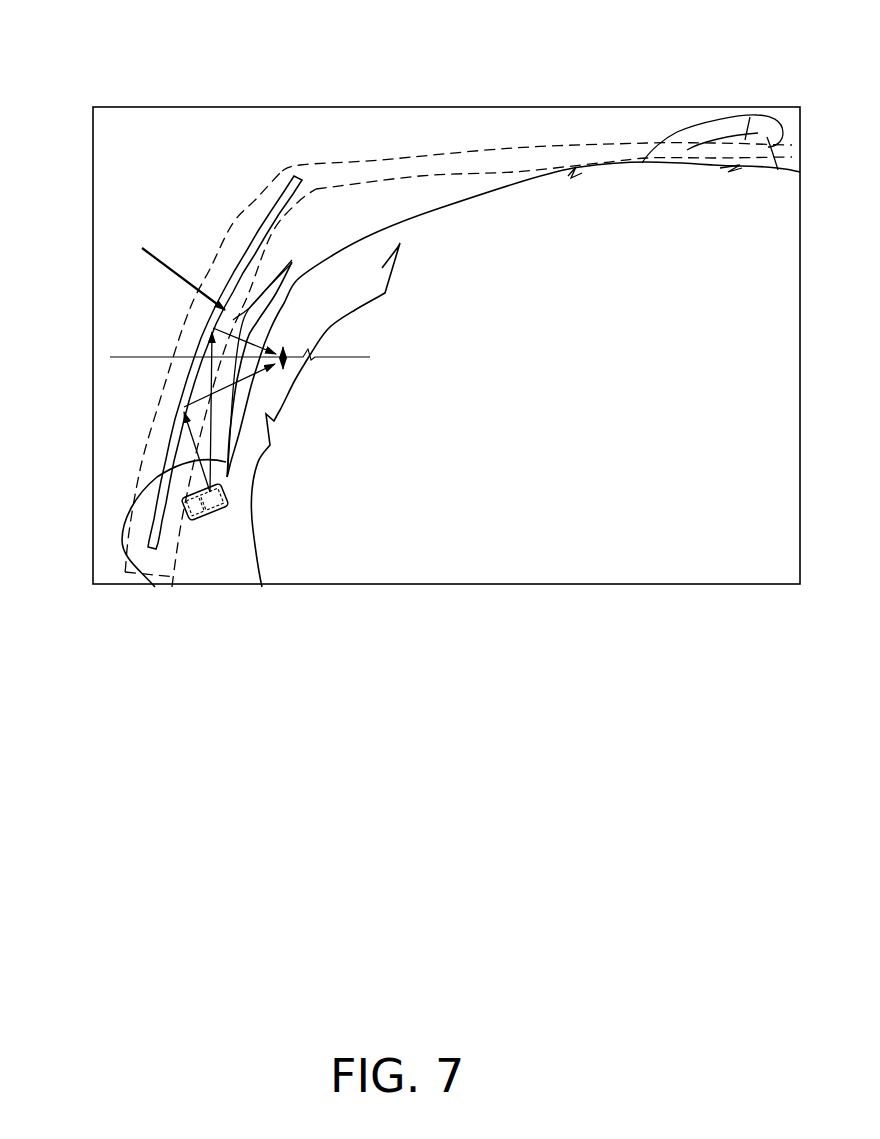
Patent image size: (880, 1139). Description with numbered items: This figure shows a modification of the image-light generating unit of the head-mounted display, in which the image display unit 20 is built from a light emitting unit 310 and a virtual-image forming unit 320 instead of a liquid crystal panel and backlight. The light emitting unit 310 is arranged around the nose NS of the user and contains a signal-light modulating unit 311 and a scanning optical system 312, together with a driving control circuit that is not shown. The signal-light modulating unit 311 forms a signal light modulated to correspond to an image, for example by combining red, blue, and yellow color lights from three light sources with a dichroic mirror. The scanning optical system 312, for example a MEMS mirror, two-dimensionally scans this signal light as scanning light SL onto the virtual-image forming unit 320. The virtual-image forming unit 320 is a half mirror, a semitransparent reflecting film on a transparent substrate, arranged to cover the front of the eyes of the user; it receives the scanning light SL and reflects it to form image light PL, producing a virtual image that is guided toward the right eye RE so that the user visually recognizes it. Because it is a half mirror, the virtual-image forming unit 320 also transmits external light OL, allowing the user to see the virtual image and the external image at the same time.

The image display unit 20 is at (278, 90).
The virtual-image forming unit 320 is at (223, 286).
The light emitting unit 310 is at (208, 532).
The signal-light modulating unit 311 is at (190, 522).
The scanning optical system 312 is at (223, 512).
The external light OL is at (173, 265).
The image light PL is at (269, 354).
The right eye RE is at (286, 343).
The scanning light SL is at (210, 452).
The nose NS is at (124, 563).